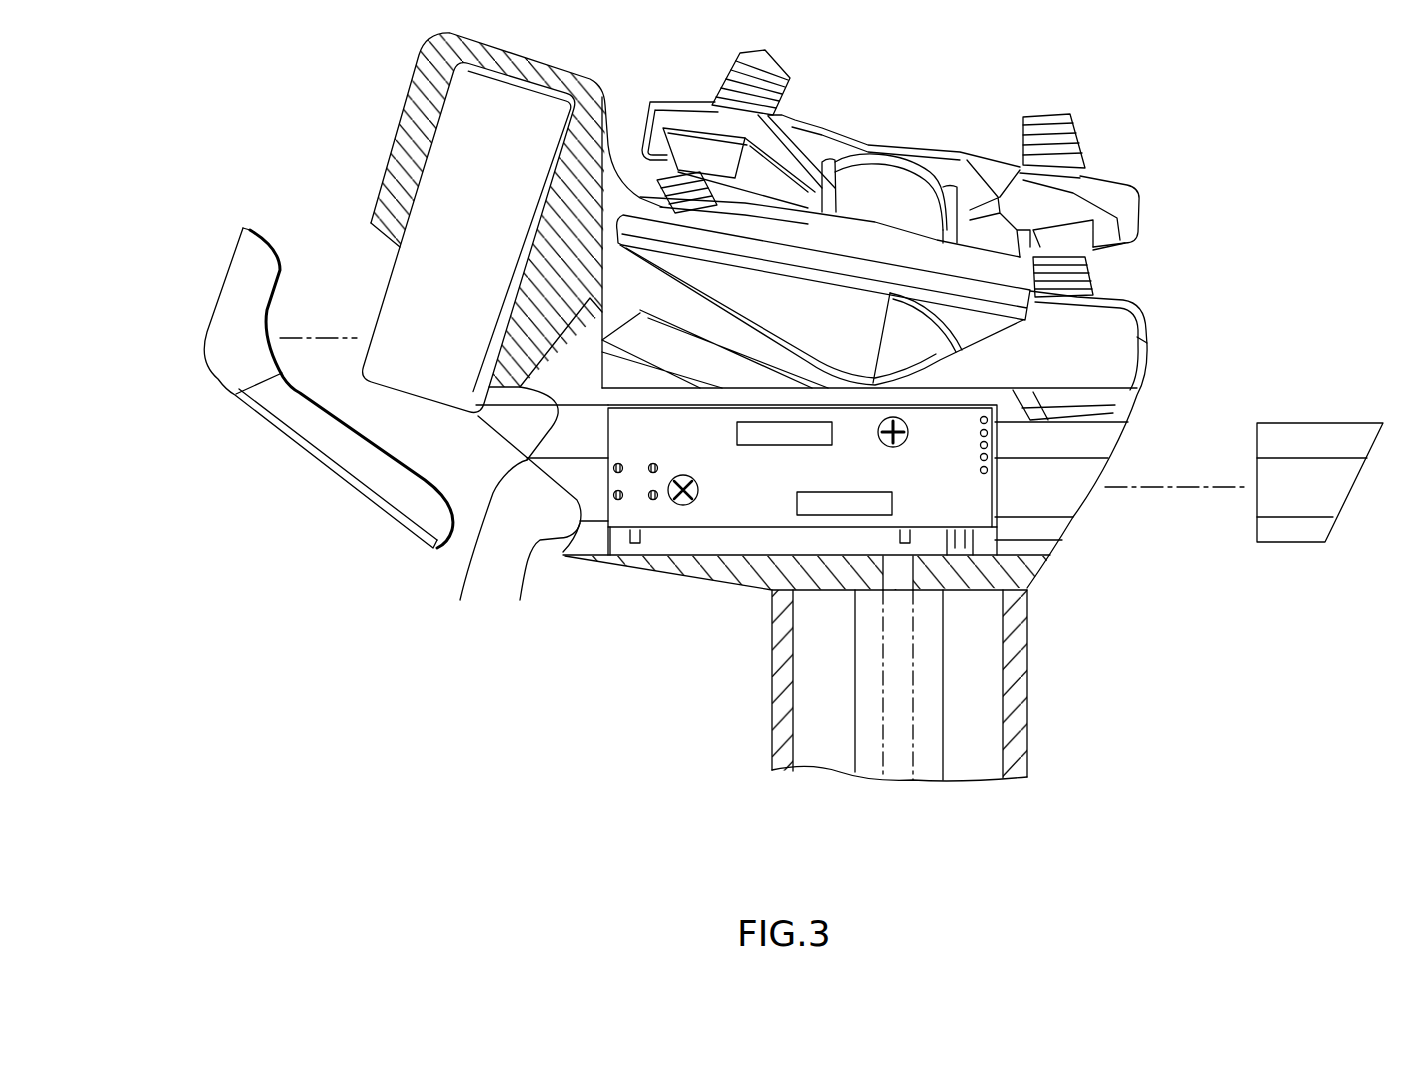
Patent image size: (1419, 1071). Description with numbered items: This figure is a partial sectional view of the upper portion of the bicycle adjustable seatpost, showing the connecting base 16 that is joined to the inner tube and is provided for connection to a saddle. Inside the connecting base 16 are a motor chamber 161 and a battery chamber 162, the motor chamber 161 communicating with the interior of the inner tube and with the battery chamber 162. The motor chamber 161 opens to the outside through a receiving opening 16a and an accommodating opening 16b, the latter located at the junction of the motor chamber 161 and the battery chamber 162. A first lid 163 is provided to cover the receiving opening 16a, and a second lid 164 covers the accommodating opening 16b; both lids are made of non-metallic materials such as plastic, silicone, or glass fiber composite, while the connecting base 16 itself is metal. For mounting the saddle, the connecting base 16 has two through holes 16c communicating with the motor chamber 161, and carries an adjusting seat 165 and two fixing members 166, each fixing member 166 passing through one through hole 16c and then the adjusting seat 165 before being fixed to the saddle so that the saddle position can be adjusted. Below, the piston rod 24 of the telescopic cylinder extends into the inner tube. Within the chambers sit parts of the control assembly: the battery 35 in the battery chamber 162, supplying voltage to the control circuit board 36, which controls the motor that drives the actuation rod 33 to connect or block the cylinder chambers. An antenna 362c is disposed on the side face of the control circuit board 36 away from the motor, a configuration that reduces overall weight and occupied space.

The connecting base 16 is at (1166, 178).
The receiving opening 16a is at (1085, 503).
The accommodating opening 16b is at (520, 600).
The through holes 16c is at (460, 600).
The motor chamber 161 is at (611, 538).
The battery chamber 162 is at (430, 151).
The first lid 163 is at (1280, 437).
The second lid 164 is at (240, 327).
The adjusting seat 165 is at (907, 155).
The fixing members 166 is at (772, 78).
The piston rod 24 is at (943, 742).
The actuation rod 33 is at (913, 685).
The battery 35 is at (413, 297).
The control circuit board 36 is at (875, 550).
The antenna 362c is at (843, 500).